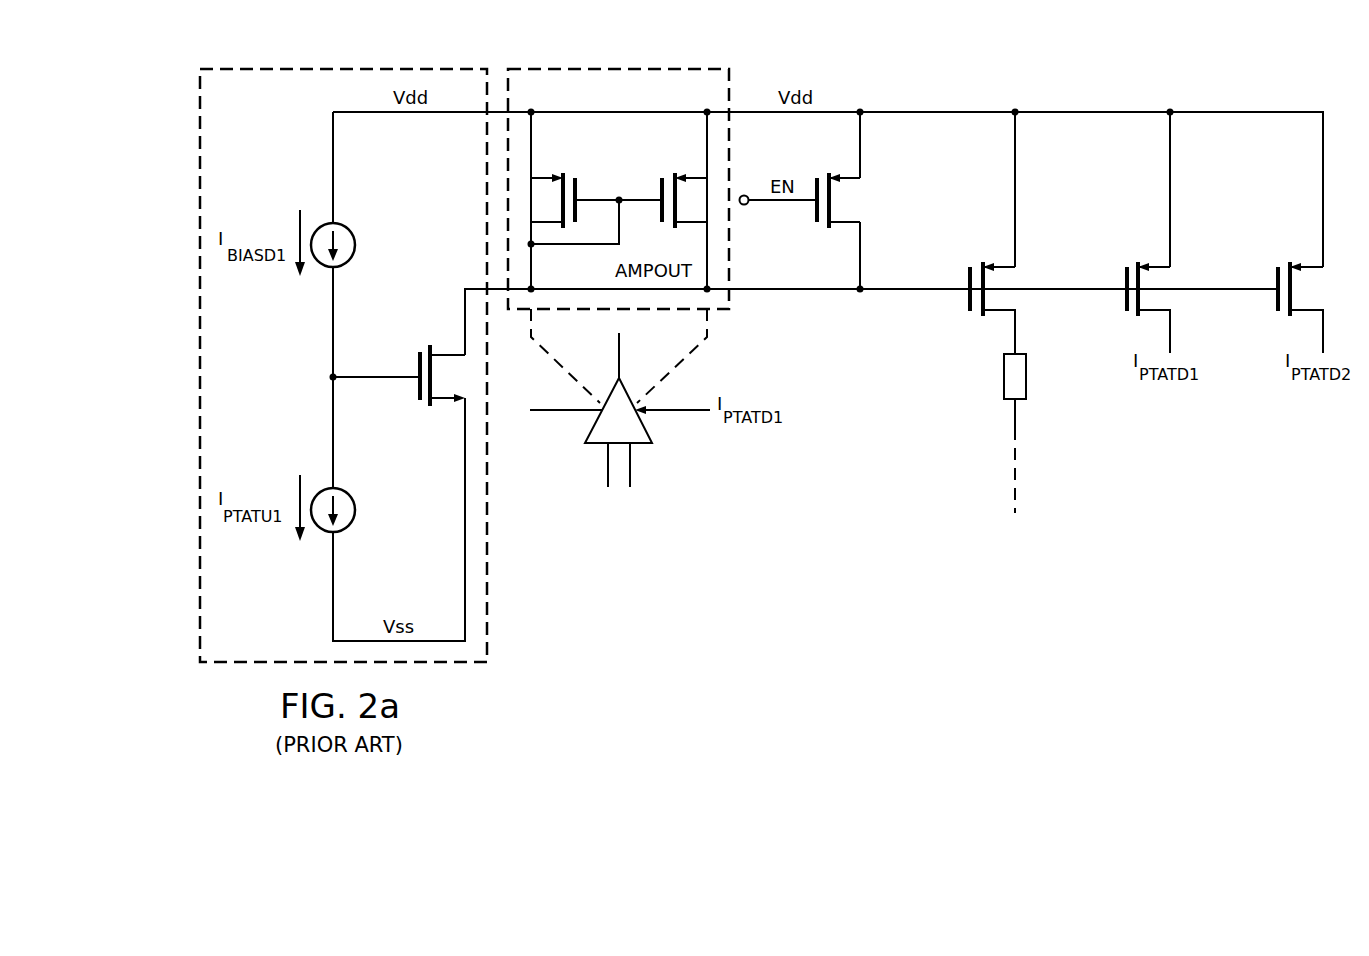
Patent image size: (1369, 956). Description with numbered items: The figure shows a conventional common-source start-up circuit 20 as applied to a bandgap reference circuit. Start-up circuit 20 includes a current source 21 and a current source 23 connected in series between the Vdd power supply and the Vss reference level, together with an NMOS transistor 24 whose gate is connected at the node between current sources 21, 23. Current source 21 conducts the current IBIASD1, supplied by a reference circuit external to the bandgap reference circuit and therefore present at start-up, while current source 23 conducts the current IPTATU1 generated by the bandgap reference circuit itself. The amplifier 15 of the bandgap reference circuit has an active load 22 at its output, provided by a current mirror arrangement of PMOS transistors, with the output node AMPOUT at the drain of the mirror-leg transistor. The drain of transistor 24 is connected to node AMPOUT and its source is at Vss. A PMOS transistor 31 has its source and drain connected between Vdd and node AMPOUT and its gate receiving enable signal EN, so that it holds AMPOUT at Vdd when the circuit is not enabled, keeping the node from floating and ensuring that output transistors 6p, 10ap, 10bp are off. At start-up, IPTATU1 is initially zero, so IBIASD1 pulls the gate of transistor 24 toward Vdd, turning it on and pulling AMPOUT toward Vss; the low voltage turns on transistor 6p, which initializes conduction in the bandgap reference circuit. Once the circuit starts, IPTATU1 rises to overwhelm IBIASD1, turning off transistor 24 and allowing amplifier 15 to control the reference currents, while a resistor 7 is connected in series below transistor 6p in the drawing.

The start-up circuit 20 is at (316, 61).
The active load 22 is at (591, 61).
The current source 21 is at (356, 243).
The current source 23 is at (356, 510).
The NMOS transistor 24 is at (419, 389).
The amplifier 15 is at (595, 420).
The PMOS transistor 31 is at (815, 212).
The output transistor 6p is at (969, 281).
The output transistor 10ap is at (1125, 281).
The output transistor 10bp is at (1277, 282).
The resistor 7 is at (1027, 375).